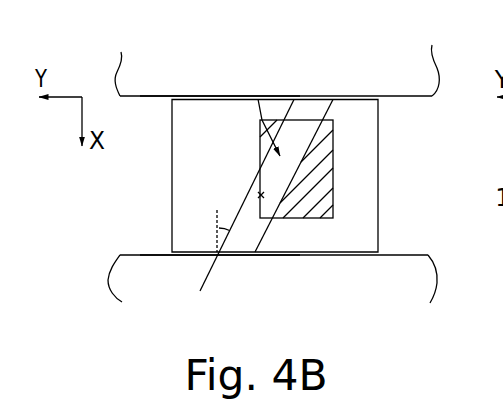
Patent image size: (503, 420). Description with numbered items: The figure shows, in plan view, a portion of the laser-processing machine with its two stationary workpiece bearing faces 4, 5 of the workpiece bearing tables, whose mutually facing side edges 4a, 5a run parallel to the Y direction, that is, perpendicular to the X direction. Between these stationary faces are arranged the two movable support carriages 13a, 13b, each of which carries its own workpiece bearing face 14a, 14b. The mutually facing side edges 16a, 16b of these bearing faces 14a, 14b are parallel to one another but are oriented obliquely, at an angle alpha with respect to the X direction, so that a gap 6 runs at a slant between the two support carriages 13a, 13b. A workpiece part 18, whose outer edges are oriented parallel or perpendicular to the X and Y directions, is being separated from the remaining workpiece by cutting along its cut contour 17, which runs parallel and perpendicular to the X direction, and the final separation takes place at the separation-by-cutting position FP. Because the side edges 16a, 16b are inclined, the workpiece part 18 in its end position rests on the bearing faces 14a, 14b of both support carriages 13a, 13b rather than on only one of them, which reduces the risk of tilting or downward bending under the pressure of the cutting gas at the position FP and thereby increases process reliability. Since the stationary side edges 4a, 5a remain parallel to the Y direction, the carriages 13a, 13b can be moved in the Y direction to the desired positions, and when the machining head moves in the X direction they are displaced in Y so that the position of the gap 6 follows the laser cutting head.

The stationary workpiece bearing face 4 is at (117, 77).
The side edge of stationary workpiece bearing face 4a is at (160, 99).
The stationary workpiece bearing face 5 is at (128, 279).
The side edge of stationary workpiece bearing face 5a is at (154, 247).
The gap 6 is at (258, 99).
The support carriage 13a is at (146, 182).
The support carriage 13b is at (403, 206).
The workpiece bearing face of support carriage 14a is at (197, 108).
The workpiece bearing face of support carriage 14b is at (367, 110).
The side edge of workpiece bearing face 16a is at (231, 211).
The side edge of workpiece bearing face 16b is at (327, 107).
The cut contour 17 is at (258, 214).
The workpiece part 18 is at (303, 133).
The separation-by-cutting position FP is at (259, 196).